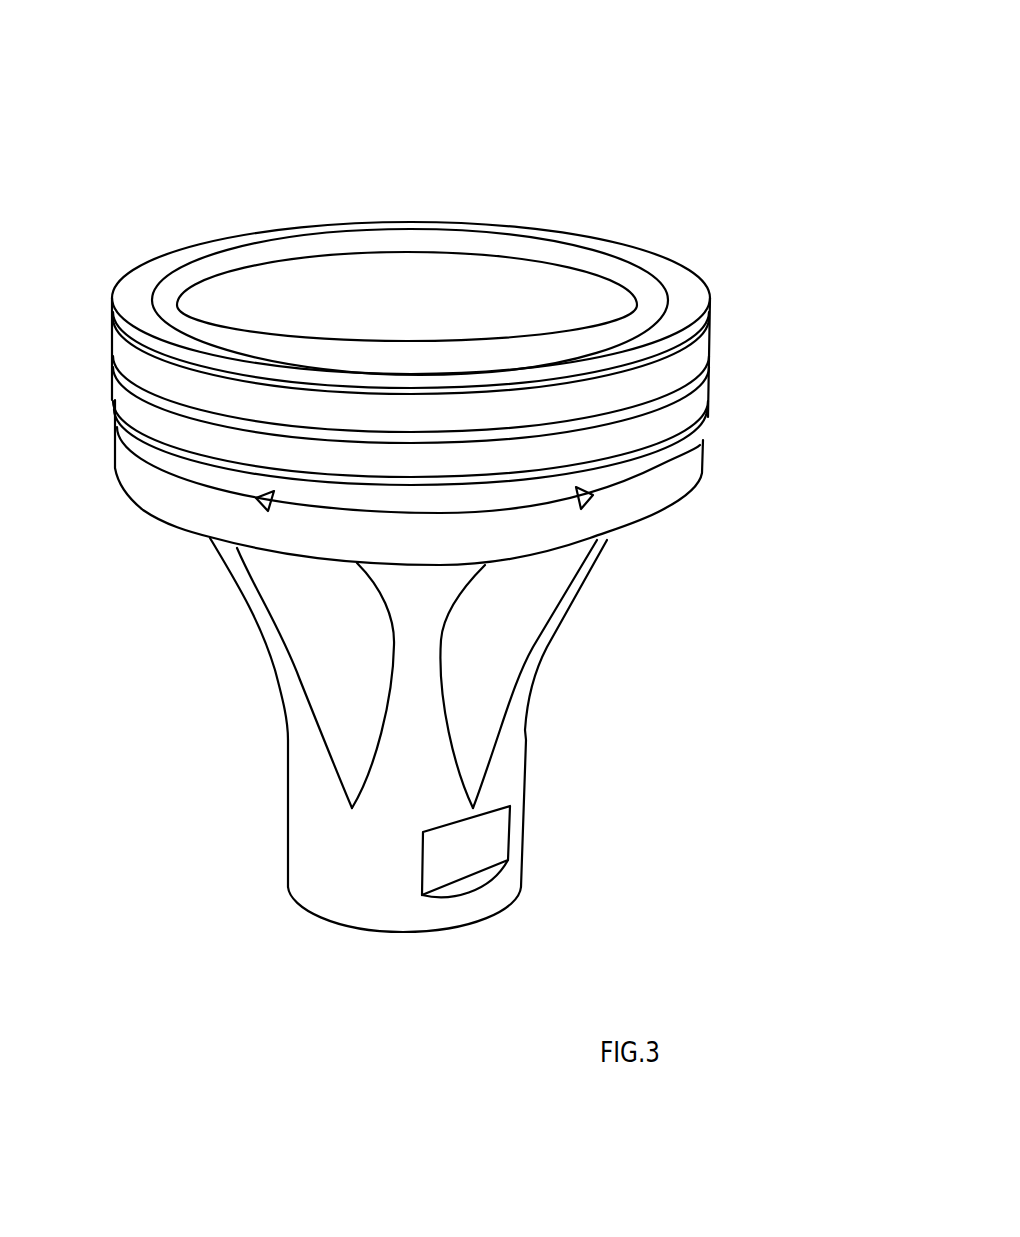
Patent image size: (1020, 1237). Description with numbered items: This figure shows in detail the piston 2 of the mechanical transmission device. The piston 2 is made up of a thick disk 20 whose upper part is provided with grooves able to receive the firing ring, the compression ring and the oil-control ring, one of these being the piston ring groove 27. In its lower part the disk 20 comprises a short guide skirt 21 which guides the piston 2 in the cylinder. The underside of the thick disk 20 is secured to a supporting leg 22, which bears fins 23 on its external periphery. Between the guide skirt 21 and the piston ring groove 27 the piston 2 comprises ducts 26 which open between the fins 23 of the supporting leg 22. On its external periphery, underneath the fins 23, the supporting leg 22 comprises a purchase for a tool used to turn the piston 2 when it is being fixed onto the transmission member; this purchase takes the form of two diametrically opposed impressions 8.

The piston 2 is at (525, 146).
The thick disk 20 is at (302, 240).
The piston ring groove 27 is at (705, 422).
The guide skirt 21 is at (688, 478).
The ducts 26 is at (268, 500).
The fins 23 is at (425, 657).
The supporting leg 22 is at (325, 825).
The impressions 8 is at (492, 845).